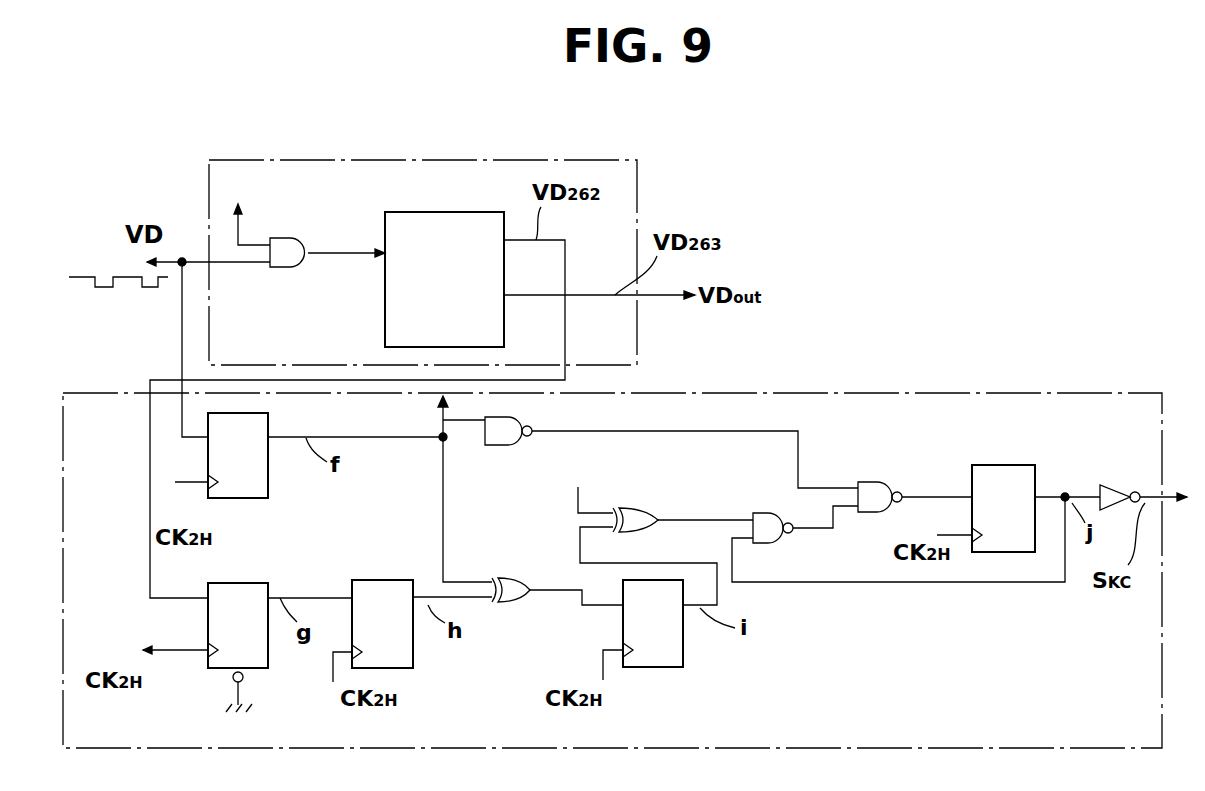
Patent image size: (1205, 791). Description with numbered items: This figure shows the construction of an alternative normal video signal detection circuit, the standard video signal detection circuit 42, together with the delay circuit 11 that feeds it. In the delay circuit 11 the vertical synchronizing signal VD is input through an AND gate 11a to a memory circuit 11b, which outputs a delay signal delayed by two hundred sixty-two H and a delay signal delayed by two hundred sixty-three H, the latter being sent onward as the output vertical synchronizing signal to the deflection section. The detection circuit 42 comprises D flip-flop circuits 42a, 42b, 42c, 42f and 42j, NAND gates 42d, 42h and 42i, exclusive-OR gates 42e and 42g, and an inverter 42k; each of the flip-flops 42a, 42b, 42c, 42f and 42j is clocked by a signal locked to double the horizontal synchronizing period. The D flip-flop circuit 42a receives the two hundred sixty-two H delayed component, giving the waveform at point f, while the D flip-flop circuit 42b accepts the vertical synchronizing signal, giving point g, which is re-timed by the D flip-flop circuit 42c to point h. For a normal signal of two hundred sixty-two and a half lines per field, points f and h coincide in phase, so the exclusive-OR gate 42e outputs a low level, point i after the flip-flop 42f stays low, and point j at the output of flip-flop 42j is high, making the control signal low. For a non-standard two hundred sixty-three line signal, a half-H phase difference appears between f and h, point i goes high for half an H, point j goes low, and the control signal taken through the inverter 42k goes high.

The delay circuit 11 is at (586, 160).
The AND gate 11a is at (290, 268).
The memory circuit 11b is at (386, 280).
The standard video signal detection circuit 42 is at (814, 392).
The D flip-flop circuit 42a is at (255, 498).
The D flip-flop circuit 42b is at (258, 668).
The D flip-flop circuit 42c is at (380, 580).
The NAND gate 42d is at (503, 446).
The exclusive-OR gate 42e is at (517, 602).
The D flip-flop circuit 42f is at (670, 668).
The exclusive-OR gate 42g is at (653, 511).
The NAND gate 42h is at (780, 543).
The NAND gate 42i is at (873, 482).
The D flip-flop circuit 42j is at (996, 465).
The inverter 42k is at (1110, 485).